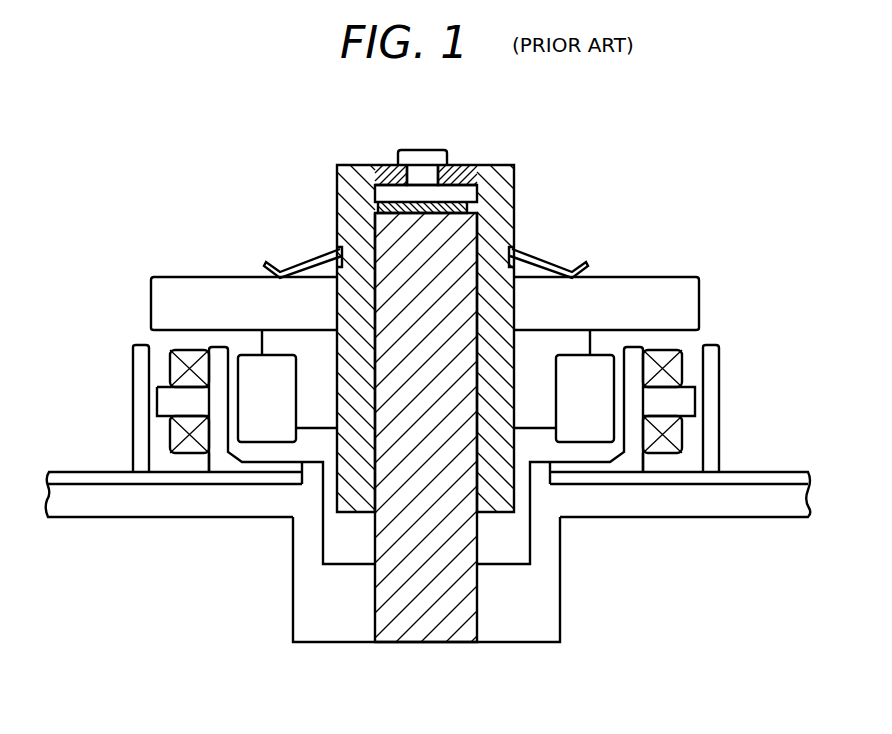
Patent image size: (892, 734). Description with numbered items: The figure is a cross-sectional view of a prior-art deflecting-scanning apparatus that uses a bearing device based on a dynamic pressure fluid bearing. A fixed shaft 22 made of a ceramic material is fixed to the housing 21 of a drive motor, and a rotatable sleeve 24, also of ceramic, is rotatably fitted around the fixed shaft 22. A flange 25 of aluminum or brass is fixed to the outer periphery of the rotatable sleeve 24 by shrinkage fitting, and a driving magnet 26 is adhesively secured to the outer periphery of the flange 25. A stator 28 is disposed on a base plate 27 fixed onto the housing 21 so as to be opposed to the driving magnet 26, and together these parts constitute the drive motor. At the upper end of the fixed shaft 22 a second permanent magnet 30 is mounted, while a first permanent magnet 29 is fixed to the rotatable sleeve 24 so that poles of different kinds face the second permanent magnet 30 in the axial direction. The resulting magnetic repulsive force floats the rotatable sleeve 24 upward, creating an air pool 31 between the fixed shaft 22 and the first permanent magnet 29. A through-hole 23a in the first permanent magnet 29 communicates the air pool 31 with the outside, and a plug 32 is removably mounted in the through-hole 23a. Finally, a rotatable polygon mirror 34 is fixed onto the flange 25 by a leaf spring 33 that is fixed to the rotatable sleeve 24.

The housing 21 is at (548, 622).
The fixed shaft 22 is at (433, 624).
The through-hole 23a is at (428, 180).
The rotatable sleeve 24 is at (345, 497).
The flange 25 is at (558, 338).
The driving magnet 26 is at (598, 366).
The base plate 27 is at (788, 480).
The stator 28 is at (690, 402).
The first permanent magnet 29 is at (390, 167).
The second permanent magnet 30 is at (470, 208).
The air pool 31 is at (455, 196).
The plug 32 is at (411, 151).
The leaf spring 33 is at (312, 256).
The rotatable polygon mirror 34 is at (163, 306).